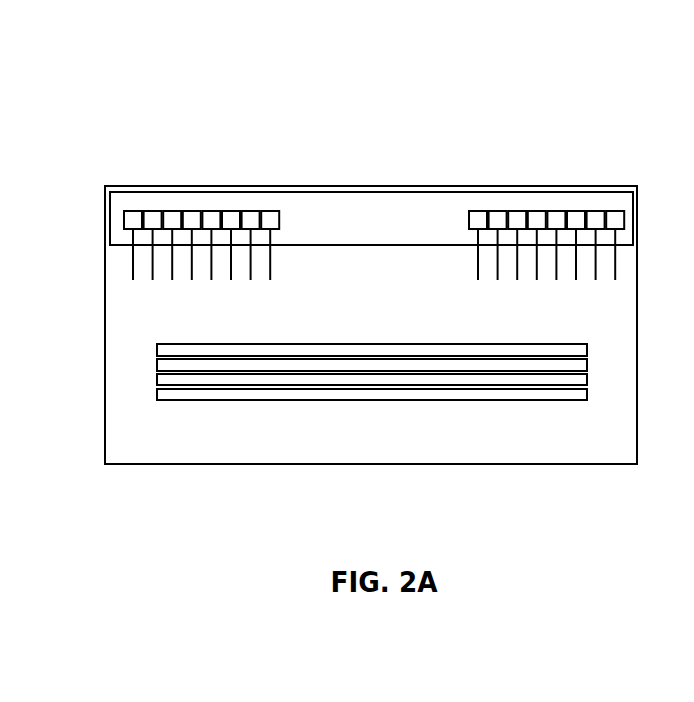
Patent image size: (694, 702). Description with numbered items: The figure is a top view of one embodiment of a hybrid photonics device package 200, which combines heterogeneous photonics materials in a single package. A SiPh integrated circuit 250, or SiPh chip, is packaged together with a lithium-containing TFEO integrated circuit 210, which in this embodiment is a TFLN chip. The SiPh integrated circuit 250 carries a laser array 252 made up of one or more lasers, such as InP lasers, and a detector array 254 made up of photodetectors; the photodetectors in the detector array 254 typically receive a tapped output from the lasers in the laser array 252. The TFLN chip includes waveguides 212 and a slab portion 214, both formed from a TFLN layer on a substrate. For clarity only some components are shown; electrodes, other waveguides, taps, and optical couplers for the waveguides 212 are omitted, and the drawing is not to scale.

The hybrid photonics device package 200 is at (199, 70).
The lithium-containing TFEO integrated circuit 210 is at (433, 468).
The waveguides 212 is at (456, 335).
The slab portion 214 is at (395, 451).
The SiPh integrated circuit 250 is at (319, 175).
The laser array 252 is at (231, 196).
The detector array 254 is at (494, 196).